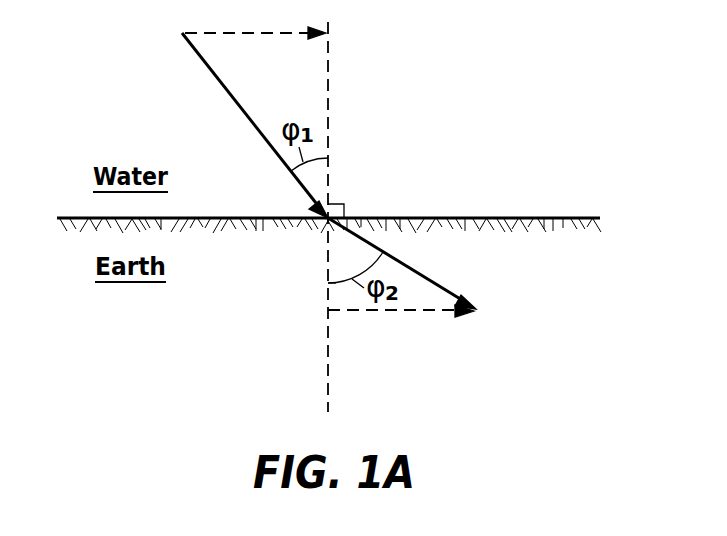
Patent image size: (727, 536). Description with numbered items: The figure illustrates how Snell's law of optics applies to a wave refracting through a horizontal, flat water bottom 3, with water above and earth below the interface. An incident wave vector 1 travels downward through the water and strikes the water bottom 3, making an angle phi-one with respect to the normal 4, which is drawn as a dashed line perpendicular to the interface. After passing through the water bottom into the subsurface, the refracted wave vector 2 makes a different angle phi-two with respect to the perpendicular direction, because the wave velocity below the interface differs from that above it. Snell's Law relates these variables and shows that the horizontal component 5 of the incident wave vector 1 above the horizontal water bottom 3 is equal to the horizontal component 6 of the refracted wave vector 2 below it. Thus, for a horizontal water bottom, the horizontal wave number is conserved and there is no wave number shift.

The incident wave vector 1 is at (231, 98).
The refracted wave vector 2 is at (437, 283).
The horizontal water bottom 3 is at (487, 218).
The normal 4 is at (333, 93).
The horizontal component of the wave vector 5 is at (268, 33).
The horizontal component of the wave vector 6 is at (411, 312).